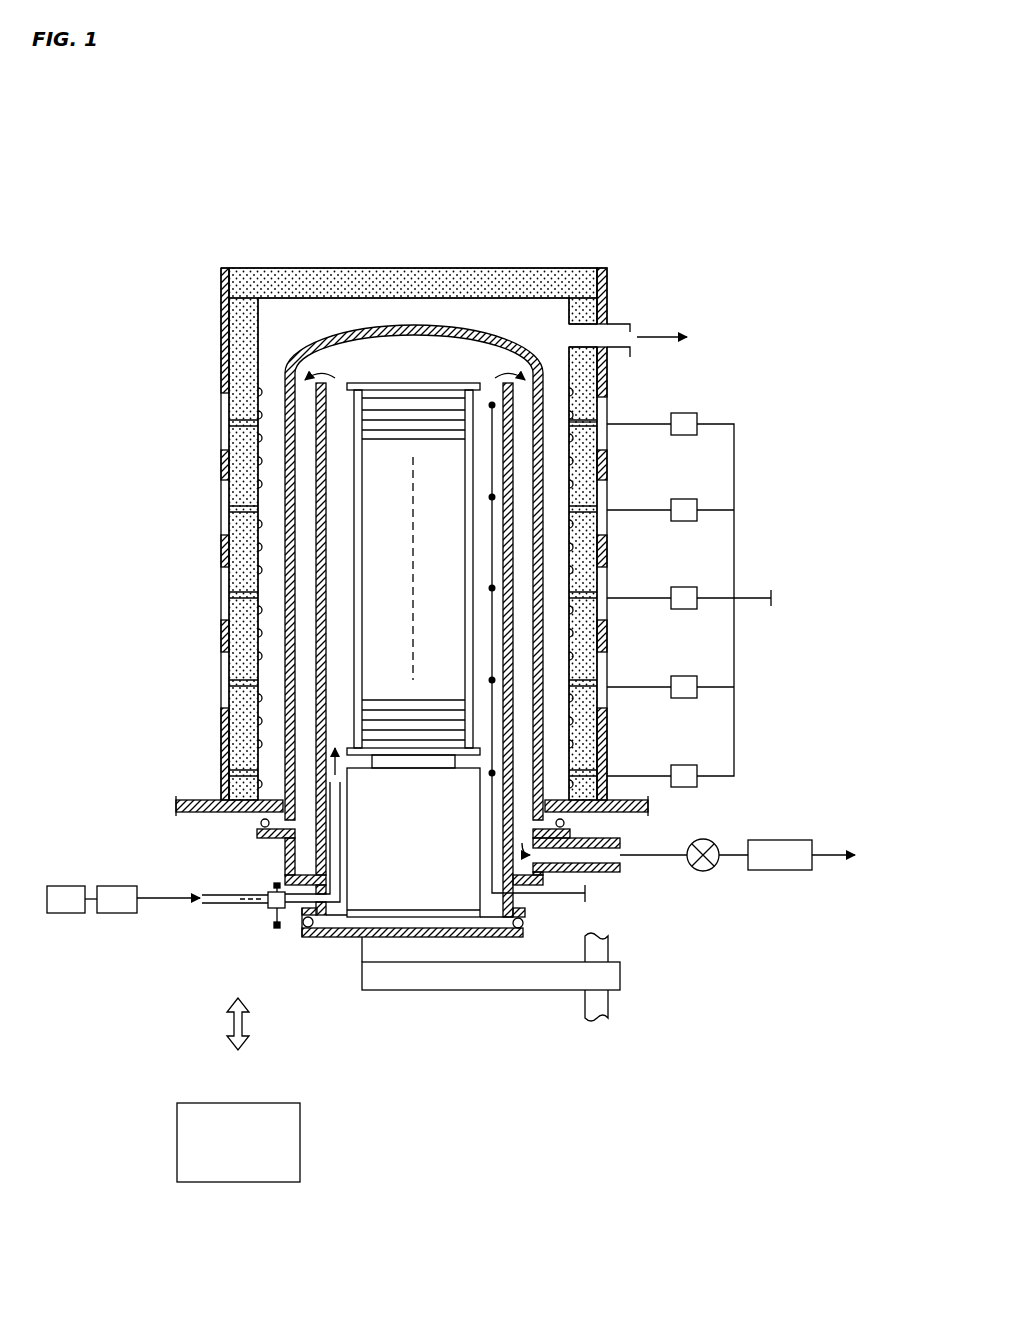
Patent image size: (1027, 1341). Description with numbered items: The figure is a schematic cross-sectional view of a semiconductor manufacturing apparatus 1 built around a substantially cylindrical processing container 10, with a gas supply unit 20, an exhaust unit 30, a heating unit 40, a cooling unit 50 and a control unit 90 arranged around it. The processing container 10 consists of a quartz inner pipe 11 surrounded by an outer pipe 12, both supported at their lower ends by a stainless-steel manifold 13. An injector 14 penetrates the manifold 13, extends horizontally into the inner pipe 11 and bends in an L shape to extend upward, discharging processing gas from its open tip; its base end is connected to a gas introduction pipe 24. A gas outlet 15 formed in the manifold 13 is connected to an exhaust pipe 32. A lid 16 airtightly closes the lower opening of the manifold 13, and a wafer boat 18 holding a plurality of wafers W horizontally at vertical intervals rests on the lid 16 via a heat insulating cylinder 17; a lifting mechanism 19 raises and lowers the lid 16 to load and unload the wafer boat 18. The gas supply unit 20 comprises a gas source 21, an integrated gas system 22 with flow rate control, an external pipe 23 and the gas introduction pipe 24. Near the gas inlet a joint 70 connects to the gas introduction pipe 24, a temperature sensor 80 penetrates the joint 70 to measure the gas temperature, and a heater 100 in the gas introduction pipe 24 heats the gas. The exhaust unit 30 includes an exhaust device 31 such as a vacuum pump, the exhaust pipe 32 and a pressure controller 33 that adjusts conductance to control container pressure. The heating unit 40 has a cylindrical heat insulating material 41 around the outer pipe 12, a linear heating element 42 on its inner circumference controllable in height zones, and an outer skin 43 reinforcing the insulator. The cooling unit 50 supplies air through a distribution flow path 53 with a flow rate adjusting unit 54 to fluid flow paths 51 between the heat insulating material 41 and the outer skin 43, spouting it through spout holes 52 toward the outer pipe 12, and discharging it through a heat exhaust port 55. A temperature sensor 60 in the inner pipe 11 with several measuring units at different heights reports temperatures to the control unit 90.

The semiconductor manufacturing apparatus 1 is at (385, 638).
The processing container 10 is at (312, 324).
The inner pipe 11 is at (315, 423).
The outer pipe 12 is at (288, 442).
The manifold 13 is at (285, 843).
The injector 14 is at (298, 908).
The gas outlet 15 is at (600, 873).
The lid 16 is at (525, 936).
The heat insulating cylinder 17 is at (385, 895).
The wafer boat 18 is at (447, 383).
The lifting mechanism 19 is at (578, 1000).
The gas supply unit 20 is at (107, 858).
The gas source 21 is at (68, 914).
The integrated gas system 22 is at (117, 914).
The external pipe 23 is at (152, 901).
The gas introduction pipe 24 is at (213, 905).
The exhaust unit 30 is at (735, 826).
The exhaust device 31 is at (780, 872).
The exhaust pipe 32 is at (735, 858).
The pressure controller 33 is at (703, 872).
The heating unit 40 is at (196, 645).
The heat insulating material 41 is at (240, 521).
The heating element 42 is at (263, 578).
The outer skin 43 is at (221, 605).
The cooling unit 50 is at (781, 386).
The fluid flow path 51 is at (603, 406).
The spout holes 52 is at (582, 424).
The distribution flow path 53 is at (734, 470).
The flow rate adjusting unit 54 is at (680, 413).
The heat exhaust port 55 is at (607, 336).
The temperature sensor 60 is at (505, 455).
The joint 70 is at (268, 891).
The temperature sensor 80 is at (270, 918).
The control unit 90 is at (237, 1103).
The heater 100 is at (250, 906).
The wafer W is at (397, 710).